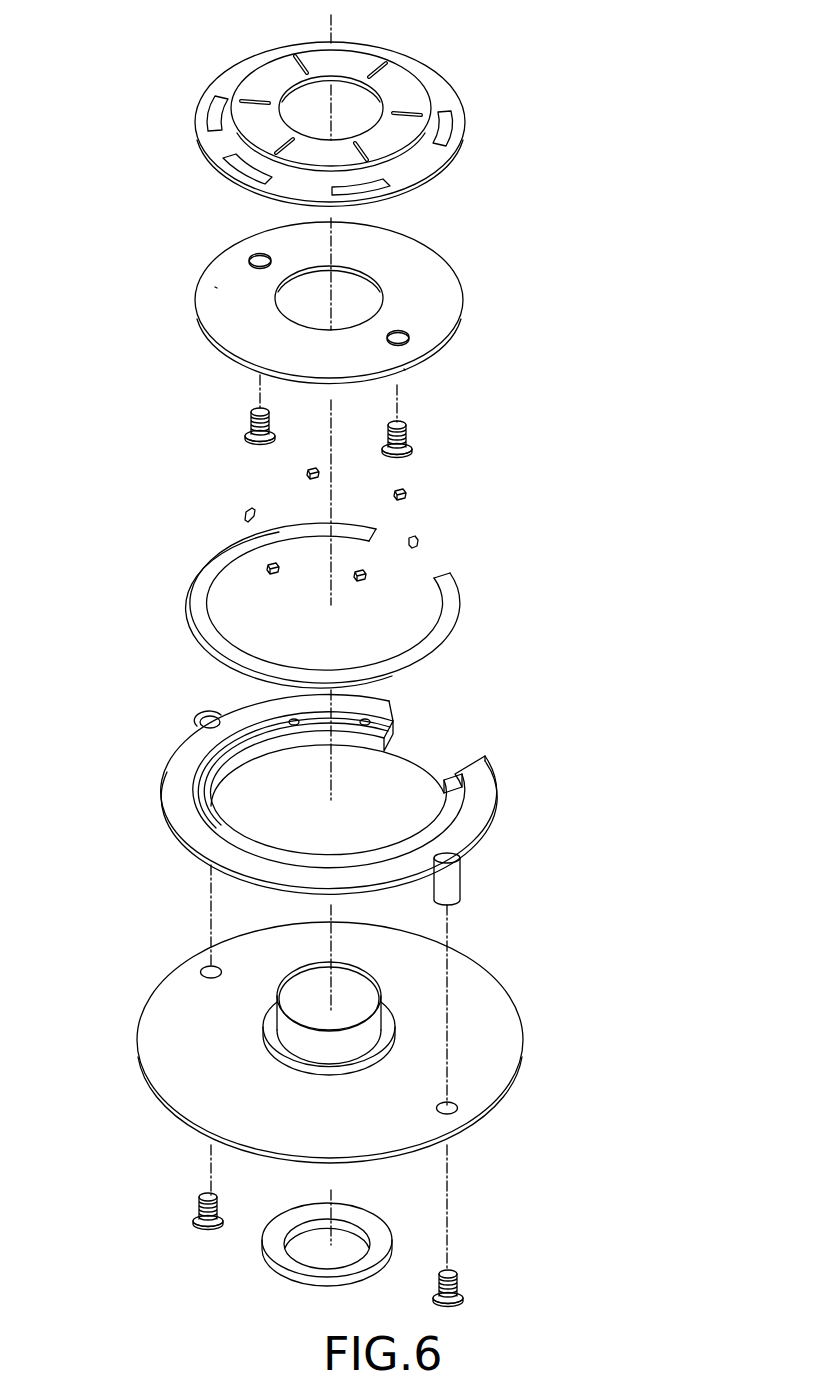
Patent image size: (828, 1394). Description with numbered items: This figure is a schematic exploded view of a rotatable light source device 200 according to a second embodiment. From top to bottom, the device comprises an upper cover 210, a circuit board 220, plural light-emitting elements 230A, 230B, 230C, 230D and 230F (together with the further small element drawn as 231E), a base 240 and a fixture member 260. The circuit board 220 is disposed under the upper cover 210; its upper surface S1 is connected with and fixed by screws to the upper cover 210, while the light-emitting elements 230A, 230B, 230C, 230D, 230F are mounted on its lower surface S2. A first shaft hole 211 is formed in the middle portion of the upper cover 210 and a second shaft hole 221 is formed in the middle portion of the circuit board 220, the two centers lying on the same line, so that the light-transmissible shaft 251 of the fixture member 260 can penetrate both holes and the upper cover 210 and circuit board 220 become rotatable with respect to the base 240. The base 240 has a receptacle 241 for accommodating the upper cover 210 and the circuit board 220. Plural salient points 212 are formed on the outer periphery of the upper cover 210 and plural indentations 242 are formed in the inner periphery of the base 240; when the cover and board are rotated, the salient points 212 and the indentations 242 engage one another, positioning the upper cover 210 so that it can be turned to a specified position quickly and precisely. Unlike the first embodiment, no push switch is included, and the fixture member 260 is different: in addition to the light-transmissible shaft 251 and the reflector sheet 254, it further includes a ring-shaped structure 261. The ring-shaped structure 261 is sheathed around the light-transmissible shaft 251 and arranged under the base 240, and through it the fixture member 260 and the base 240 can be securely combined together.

The rotatable light source device 200 is at (684, 57).
The upper cover 210 is at (466, 70).
The first shaft hole 211 is at (342, 86).
The salient points 212 is at (201, 108).
The circuit board 220 is at (478, 272).
The second shaft hole 221 is at (346, 290).
The upper surface S1 is at (216, 288).
The lower surface S2 is at (405, 370).
The light-emitting element 230A is at (244, 521).
The light-emitting element 230B is at (272, 576).
The light-emitting element 230C is at (358, 582).
The light-emitting element 230D is at (420, 545).
The light-emitting element 230F is at (305, 472).
The fifth spacer 231E is at (406, 490).
The base 240 is at (460, 698).
The receptacle 241 is at (290, 797).
The indentations 242 is at (296, 718).
The light-transmissible shaft 251 is at (307, 993).
The reflector sheet 254 is at (278, 1260).
The fixture member 260 is at (486, 945).
The ring-shaped structure 261 is at (486, 1000).